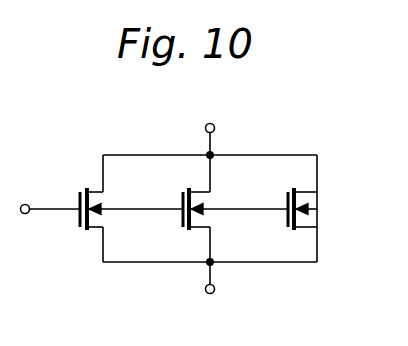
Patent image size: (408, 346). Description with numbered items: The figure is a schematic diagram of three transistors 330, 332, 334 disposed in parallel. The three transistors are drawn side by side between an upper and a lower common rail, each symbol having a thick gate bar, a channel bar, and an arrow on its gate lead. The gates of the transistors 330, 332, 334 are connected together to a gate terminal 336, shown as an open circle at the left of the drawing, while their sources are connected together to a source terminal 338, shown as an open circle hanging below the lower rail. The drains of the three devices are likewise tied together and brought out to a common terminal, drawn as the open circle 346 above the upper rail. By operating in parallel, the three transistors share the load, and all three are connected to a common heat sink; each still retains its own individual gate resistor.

The transistor 330 is at (78, 221).
The transistor 332 is at (181, 221).
The transistor 334 is at (286, 221).
The gate terminal 336 is at (43, 205).
The source terminal 338 is at (214, 292).
The supply terminal 346 is at (206, 125).